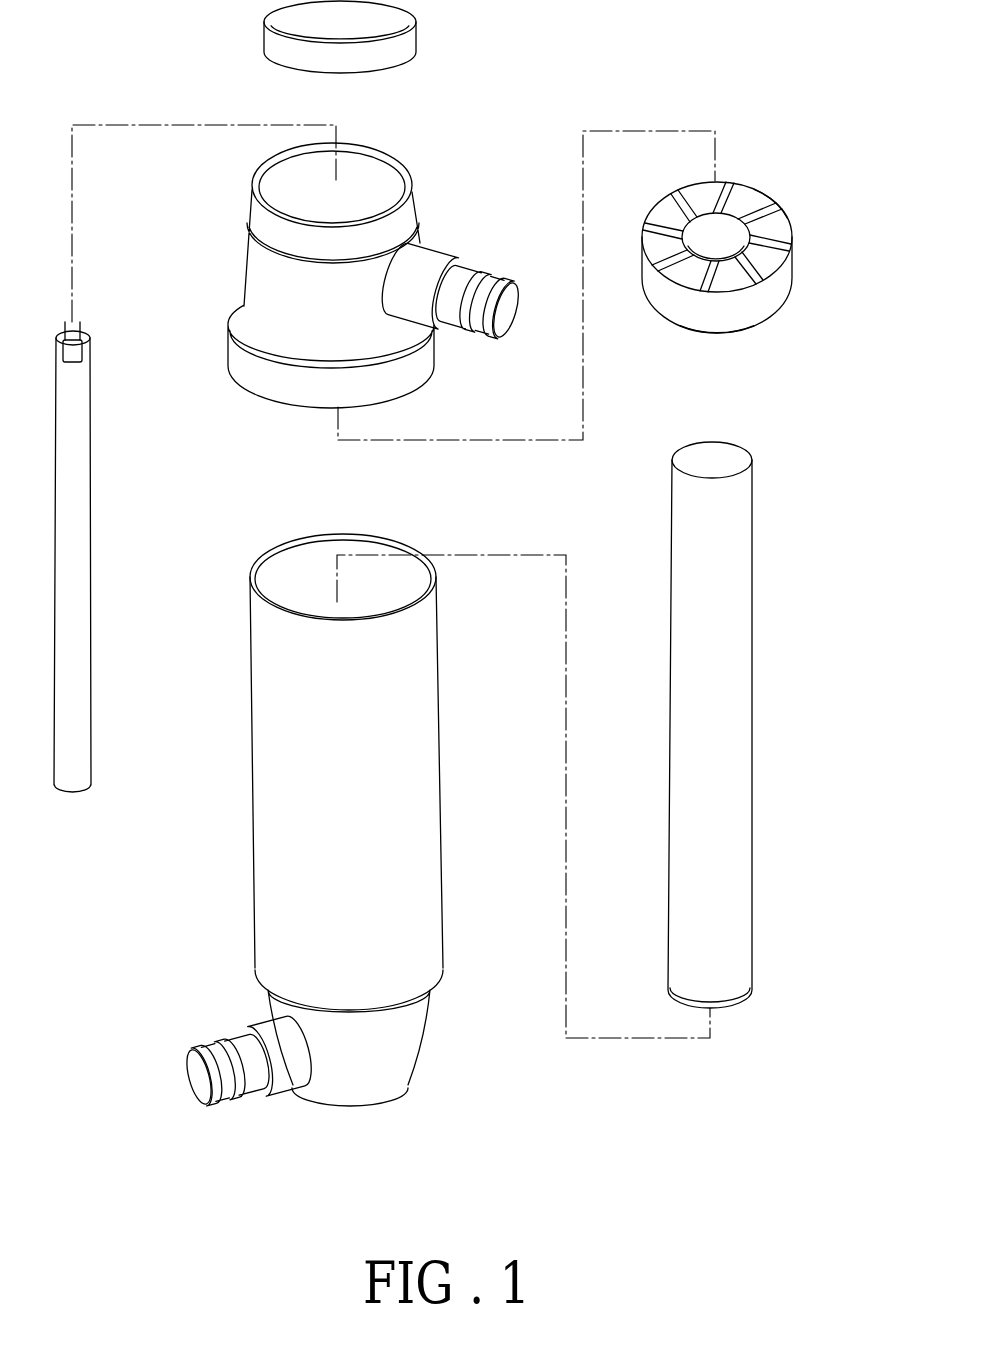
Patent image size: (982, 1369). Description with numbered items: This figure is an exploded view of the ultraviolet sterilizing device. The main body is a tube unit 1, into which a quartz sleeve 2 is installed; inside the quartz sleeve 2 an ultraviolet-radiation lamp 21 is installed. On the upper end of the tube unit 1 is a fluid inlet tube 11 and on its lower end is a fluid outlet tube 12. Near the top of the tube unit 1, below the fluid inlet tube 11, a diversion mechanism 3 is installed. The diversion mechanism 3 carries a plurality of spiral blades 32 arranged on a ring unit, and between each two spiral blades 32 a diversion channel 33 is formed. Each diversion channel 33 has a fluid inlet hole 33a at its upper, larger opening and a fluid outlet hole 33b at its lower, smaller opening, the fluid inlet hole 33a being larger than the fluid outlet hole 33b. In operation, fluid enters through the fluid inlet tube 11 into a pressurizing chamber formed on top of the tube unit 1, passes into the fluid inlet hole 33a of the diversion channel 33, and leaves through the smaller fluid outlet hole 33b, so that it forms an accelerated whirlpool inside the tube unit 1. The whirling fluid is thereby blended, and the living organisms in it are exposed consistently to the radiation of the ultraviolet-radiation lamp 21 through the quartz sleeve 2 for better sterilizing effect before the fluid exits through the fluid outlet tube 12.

The tube unit 1 is at (254, 782).
The fluid inlet tube 11 is at (505, 308).
The fluid outlet tube 12 is at (195, 1073).
The quartz sleeve 2 is at (728, 627).
The ultraviolet-radiation lamp 21 is at (80, 467).
The diversion mechanism 3 is at (736, 252).
The spiral blades 32 is at (705, 193).
The diversion channel 33 is at (745, 182).
The fluid inlet hole 33a is at (780, 223).
The fluid outlet hole 33b is at (717, 331).